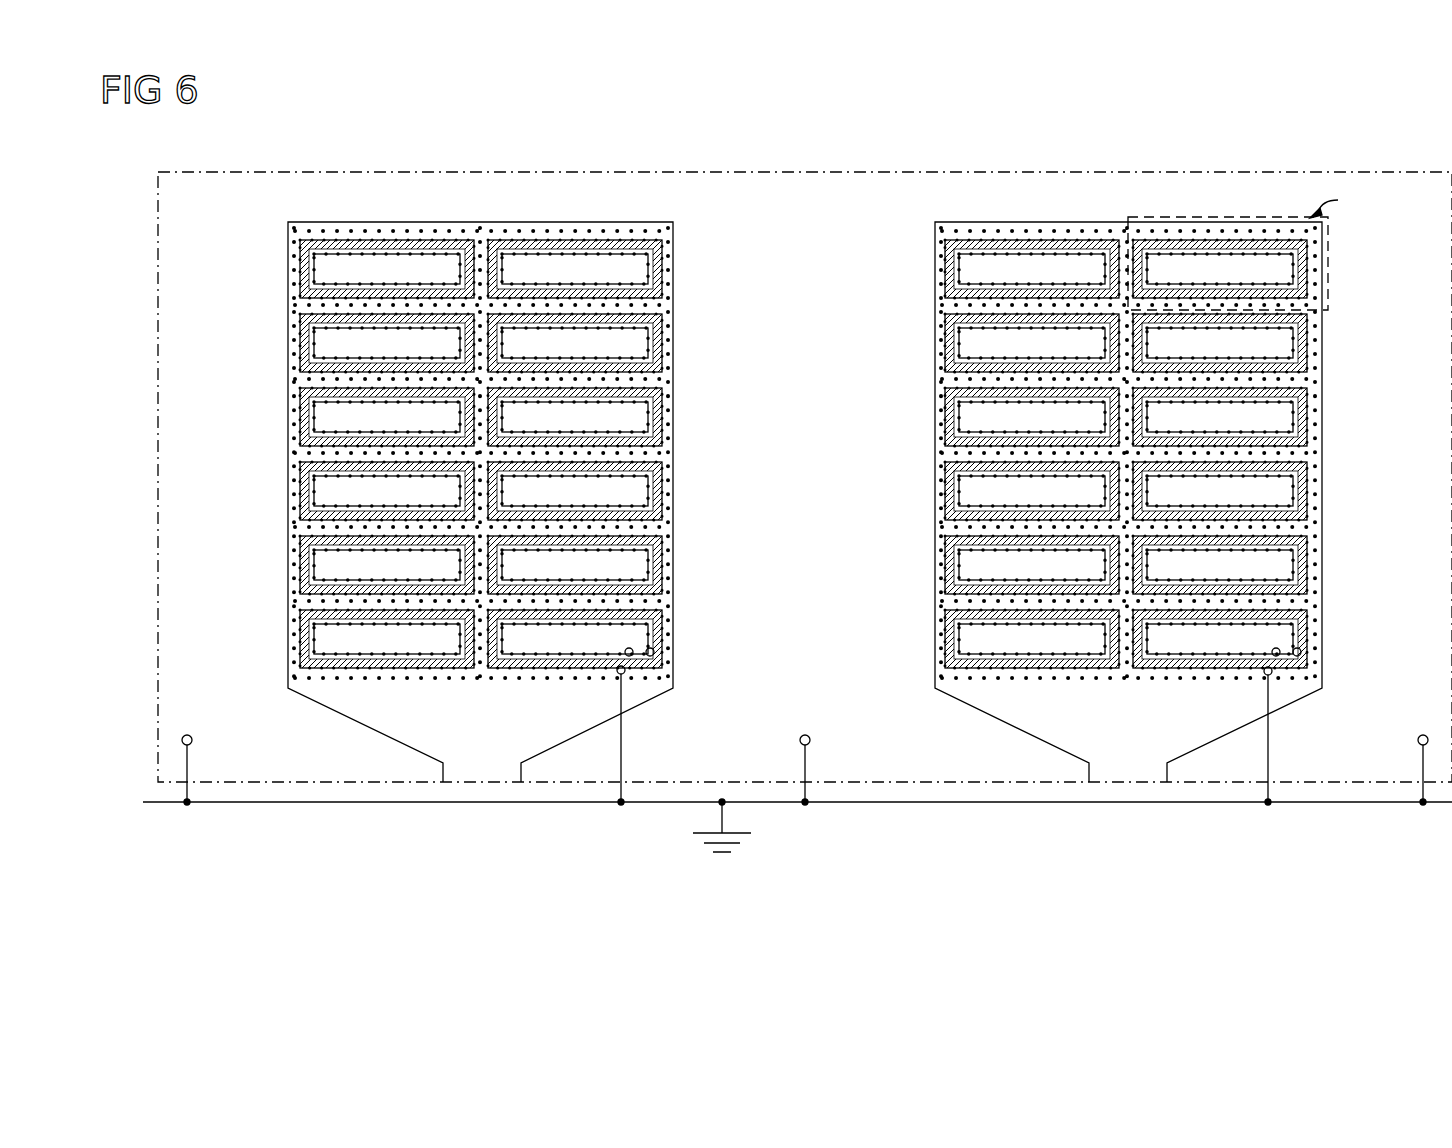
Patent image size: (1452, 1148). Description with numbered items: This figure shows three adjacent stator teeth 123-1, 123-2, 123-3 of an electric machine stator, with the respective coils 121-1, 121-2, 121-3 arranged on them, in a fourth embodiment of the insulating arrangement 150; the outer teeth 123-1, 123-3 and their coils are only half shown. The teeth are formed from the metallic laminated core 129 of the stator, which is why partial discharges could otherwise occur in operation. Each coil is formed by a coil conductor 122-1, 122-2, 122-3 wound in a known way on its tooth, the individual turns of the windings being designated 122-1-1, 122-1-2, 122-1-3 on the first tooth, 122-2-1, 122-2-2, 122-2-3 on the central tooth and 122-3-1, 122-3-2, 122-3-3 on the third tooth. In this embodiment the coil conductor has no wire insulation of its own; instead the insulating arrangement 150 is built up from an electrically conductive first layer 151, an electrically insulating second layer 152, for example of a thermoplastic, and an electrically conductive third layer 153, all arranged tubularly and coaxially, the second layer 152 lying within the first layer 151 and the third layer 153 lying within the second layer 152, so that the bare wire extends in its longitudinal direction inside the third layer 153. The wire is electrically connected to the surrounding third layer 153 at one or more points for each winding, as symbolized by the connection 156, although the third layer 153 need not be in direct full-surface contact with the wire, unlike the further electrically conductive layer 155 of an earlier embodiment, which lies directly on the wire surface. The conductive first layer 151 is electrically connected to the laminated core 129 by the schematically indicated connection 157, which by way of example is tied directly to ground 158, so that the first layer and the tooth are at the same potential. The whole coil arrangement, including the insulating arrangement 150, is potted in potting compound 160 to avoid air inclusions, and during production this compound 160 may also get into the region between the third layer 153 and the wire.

The laminated core 129 is at (739, 192).
The coil 121-1 is at (348, 201).
The coil 121-2 is at (722, 604).
The coil 121-3 is at (1193, 201).
The coil conductor 122-1 is at (436, 270).
The coil conductor 122-2 is at (632, 270).
The coil conductor 122-3 is at (1280, 270).
The first transistor cell row 1 122-1-1 is at (180, 267).
The first transistor cell row 2 122-1-2 is at (180, 343).
The first transistor cell row 3 122-1-3 is at (180, 415).
The second transistor cell row 1 122-2-1 is at (855, 267).
The second transistor cell row 2 122-2-2 is at (855, 343).
The second transistor cell row 3 122-2-3 is at (855, 415).
The third transistor cell row 1 122-3-1 is at (1333, 267).
The third transistor cell row 2 122-3-2 is at (1333, 343).
The third transistor cell row 3 122-3-3 is at (1333, 415).
The stator tooth 123-1 is at (230, 754).
The stator tooth 123-2 is at (857, 754).
The stator tooth 123-3 is at (1367, 754).
The insulating arrangement 150 is at (371, 214).
The electrically conductive first layer 151 is at (300, 494).
The electrically insulating second layer 152 is at (300, 573).
The electrically conductive third layer 153 is at (440, 258).
The further electrically conductive layer 155 is at (1086, 662).
The connection 156 is at (665, 665).
The electrical connection 157 is at (548, 806).
The ground 158 is at (722, 856).
The potting compound 160 is at (298, 525).